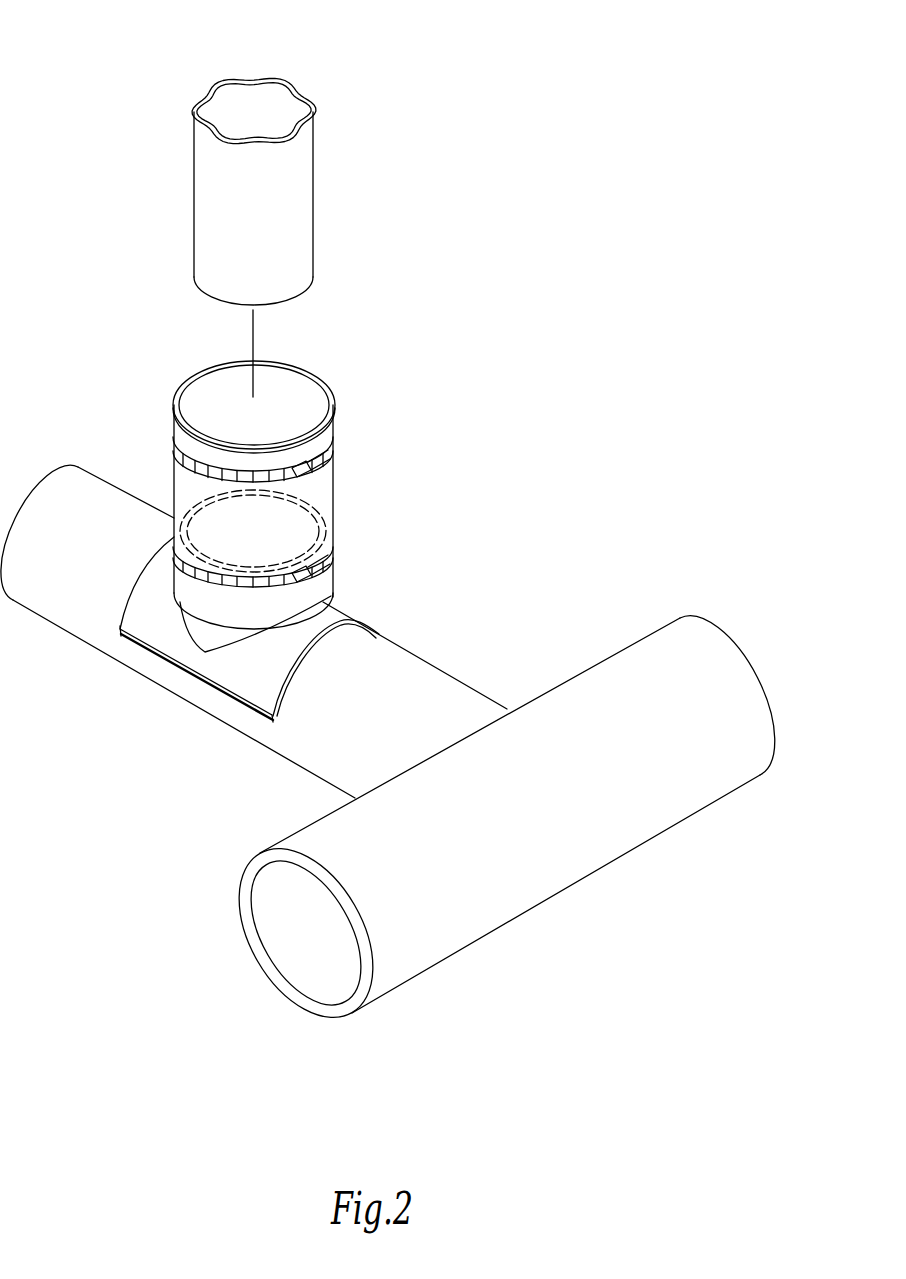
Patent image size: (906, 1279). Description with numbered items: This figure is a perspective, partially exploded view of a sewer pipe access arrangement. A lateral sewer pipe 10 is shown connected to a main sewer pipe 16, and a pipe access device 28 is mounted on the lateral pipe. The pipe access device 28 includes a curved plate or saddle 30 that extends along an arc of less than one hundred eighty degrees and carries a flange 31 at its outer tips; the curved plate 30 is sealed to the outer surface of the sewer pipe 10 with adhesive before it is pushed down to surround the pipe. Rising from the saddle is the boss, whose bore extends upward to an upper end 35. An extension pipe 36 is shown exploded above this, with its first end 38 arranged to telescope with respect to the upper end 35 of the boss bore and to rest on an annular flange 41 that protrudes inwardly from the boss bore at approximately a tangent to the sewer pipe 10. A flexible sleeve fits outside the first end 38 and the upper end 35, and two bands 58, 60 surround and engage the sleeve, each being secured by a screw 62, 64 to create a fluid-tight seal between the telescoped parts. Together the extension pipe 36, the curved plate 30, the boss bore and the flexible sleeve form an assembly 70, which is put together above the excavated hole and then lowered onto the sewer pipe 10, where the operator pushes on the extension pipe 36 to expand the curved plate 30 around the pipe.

The lateral sewer pipe 10 is at (254, 615).
The main sewer pipe 16 is at (595, 650).
The pipe access device 28 is at (252, 654).
The curved plate or saddle 30 is at (232, 620).
The flange 31 is at (195, 674).
The upper end of boss bore 35 is at (177, 396).
The extension pipe 36 is at (200, 183).
The first end of extension pipe 38 is at (196, 289).
The annular flange 41 is at (332, 509).
The band 58 is at (172, 437).
The band 60 is at (173, 537).
The screw 62 is at (322, 462).
The screw 64 is at (322, 567).
The assembly 70 is at (224, 203).